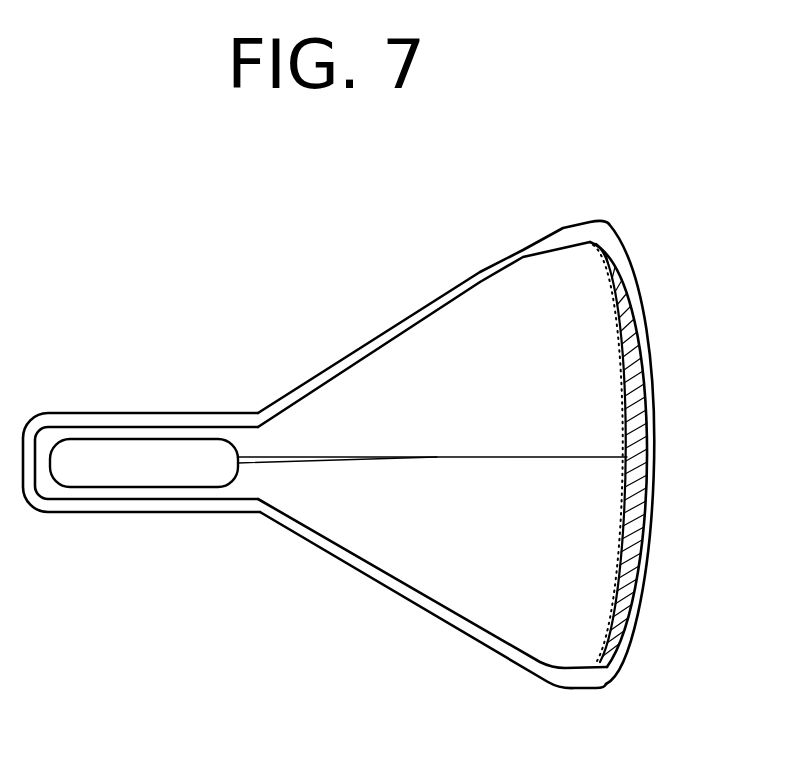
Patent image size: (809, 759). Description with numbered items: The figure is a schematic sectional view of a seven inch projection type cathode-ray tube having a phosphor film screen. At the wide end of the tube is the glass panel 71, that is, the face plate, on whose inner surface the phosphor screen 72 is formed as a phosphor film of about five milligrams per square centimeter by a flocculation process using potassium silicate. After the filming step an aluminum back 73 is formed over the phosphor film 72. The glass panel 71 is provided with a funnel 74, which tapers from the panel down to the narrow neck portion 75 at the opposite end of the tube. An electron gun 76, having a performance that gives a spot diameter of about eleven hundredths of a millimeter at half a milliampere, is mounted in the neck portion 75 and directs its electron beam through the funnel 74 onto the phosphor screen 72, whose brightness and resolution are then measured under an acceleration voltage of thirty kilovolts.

The glass panel 71 is at (642, 300).
The phosphor screen 72 is at (652, 422).
The aluminum back 73 is at (627, 568).
The funnel 74 is at (422, 312).
The neck portion 75 is at (167, 427).
The electron gun 76 is at (97, 460).